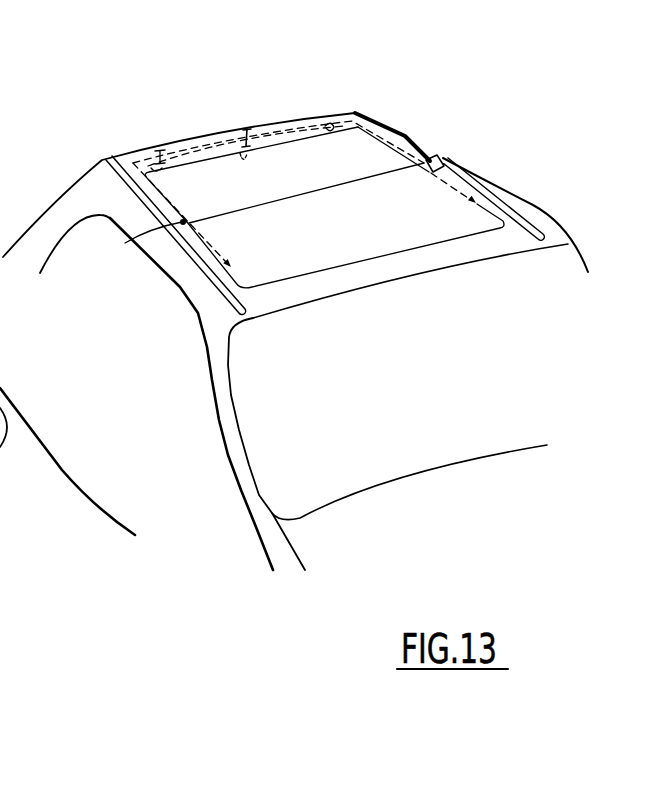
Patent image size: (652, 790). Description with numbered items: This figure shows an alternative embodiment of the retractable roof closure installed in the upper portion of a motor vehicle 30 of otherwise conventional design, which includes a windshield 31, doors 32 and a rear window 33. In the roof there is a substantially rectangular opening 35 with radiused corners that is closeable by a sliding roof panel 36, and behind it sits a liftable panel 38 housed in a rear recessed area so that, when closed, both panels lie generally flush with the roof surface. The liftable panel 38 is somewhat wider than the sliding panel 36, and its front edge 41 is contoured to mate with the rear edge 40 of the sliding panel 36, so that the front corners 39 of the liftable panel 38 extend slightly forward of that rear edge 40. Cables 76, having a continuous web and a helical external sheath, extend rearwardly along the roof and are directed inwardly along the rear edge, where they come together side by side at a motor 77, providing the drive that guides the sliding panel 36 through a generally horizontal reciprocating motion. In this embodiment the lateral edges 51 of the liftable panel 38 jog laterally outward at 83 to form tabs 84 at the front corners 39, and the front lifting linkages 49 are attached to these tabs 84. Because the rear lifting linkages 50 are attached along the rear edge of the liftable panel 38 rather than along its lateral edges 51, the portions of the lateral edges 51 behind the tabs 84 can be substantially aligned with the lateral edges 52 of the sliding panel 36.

The vehicle 30 is at (473, 484).
The windshield 31 is at (422, 362).
The doors 32 is at (167, 367).
The rear window 33 is at (50, 183).
The opening 35 is at (434, 243).
The sliding roof panel 36 is at (380, 243).
The liftable panel 38 is at (296, 182).
The front corners 39 is at (182, 224).
The rear edge 40 is at (283, 196).
The front edge 41 is at (362, 188).
The front lifting linkages 49 is at (123, 240).
The rear lifting linkages 50 is at (188, 91).
The lateral edges 51 is at (146, 191).
The lateral edges 52 is at (240, 283).
The cables 76 is at (183, 218).
The motor 77 is at (245, 126).
The jog 83 is at (434, 155).
The tabs 84 is at (447, 158).